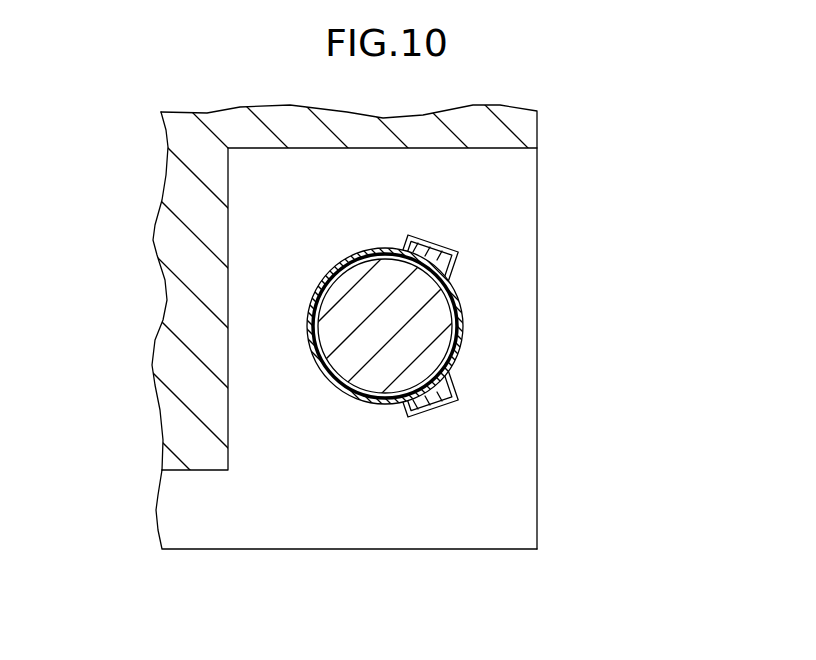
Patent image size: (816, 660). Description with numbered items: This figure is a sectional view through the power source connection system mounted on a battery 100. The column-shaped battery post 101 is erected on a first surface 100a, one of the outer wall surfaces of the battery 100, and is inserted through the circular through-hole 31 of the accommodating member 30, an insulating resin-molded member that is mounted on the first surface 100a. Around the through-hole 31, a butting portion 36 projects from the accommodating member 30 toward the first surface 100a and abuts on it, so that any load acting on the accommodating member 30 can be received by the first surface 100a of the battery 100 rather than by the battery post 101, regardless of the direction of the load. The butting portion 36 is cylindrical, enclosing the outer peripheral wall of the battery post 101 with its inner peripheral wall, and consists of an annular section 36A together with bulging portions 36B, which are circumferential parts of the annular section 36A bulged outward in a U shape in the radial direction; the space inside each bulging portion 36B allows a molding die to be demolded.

The battery 100 is at (130, 178).
The first surface 100a is at (200, 532).
The accommodating member 30 is at (448, 385).
The through-hole 31 is at (422, 258).
The butting portion 36 is at (448, 297).
The annular section 36A is at (462, 325).
The bulging portion 36B is at (437, 244).
The battery post 101 is at (378, 377).